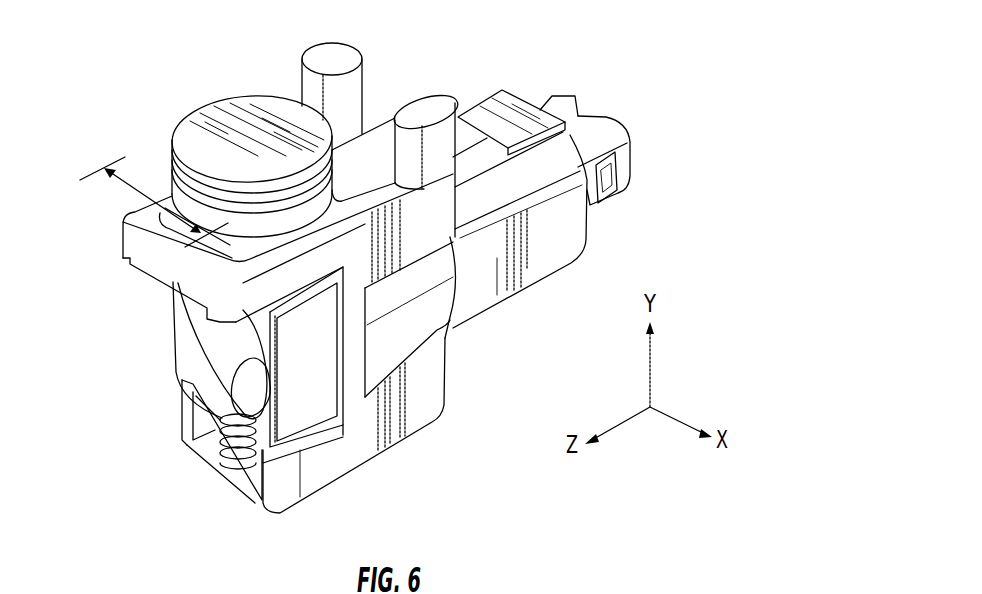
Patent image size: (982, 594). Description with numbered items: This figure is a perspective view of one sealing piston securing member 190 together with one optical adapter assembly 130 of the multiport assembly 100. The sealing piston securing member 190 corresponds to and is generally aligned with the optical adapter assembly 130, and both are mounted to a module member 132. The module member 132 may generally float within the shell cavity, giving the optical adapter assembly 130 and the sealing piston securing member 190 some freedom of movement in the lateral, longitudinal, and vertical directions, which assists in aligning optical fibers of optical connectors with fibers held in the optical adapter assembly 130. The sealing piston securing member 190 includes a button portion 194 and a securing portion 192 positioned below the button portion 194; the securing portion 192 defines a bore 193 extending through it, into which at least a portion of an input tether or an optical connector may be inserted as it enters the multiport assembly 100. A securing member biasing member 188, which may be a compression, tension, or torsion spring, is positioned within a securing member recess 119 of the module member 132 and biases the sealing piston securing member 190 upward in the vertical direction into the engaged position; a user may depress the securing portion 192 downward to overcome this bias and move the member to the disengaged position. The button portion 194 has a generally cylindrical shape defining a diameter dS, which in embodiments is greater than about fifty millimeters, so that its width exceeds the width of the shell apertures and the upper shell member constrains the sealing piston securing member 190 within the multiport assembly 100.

The multiport assembly 100 is at (646, 66).
The securing member recess 119 is at (256, 498).
The optical adapter assembly 130 is at (500, 78).
The module member 132 is at (340, 46).
The securing member biasing member 188 is at (240, 467).
The sealing piston securing member 190 is at (208, 90).
The securing portion 192 is at (150, 343).
The bore 193 is at (210, 350).
The button portion 194 is at (172, 140).
The diameter dS is at (172, 198).